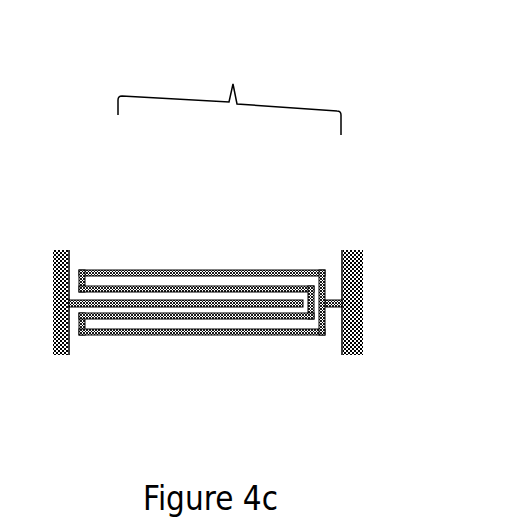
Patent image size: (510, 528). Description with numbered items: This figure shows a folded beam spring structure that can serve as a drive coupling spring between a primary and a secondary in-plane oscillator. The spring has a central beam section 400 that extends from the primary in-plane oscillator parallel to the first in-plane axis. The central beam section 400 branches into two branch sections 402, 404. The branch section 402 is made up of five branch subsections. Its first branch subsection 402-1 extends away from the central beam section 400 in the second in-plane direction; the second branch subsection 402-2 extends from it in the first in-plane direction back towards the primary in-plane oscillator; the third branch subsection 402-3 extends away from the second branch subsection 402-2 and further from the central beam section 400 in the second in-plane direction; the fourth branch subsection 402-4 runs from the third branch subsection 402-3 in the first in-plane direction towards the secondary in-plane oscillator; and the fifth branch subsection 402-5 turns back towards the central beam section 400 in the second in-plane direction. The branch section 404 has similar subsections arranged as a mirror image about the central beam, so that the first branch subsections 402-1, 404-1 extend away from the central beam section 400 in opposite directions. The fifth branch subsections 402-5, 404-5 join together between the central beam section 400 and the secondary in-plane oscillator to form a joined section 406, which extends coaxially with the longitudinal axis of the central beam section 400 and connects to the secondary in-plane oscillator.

The central beam section 400 is at (73, 298).
The branch section 402 is at (229, 92).
The first branch subsection 402-1 is at (305, 289).
The second branch subsection 402-2 is at (147, 292).
The third branch subsection 402-3 is at (96, 274).
The fourth branch subsection 402-4 is at (207, 273).
The fifth branch subsection 402-5 is at (343, 300).
The branch section 404 is at (93, 322).
The first branch subsection 404-1 is at (303, 318).
The fifth branch subsection 404-5 is at (331, 308).
The joined section 406 is at (366, 288).